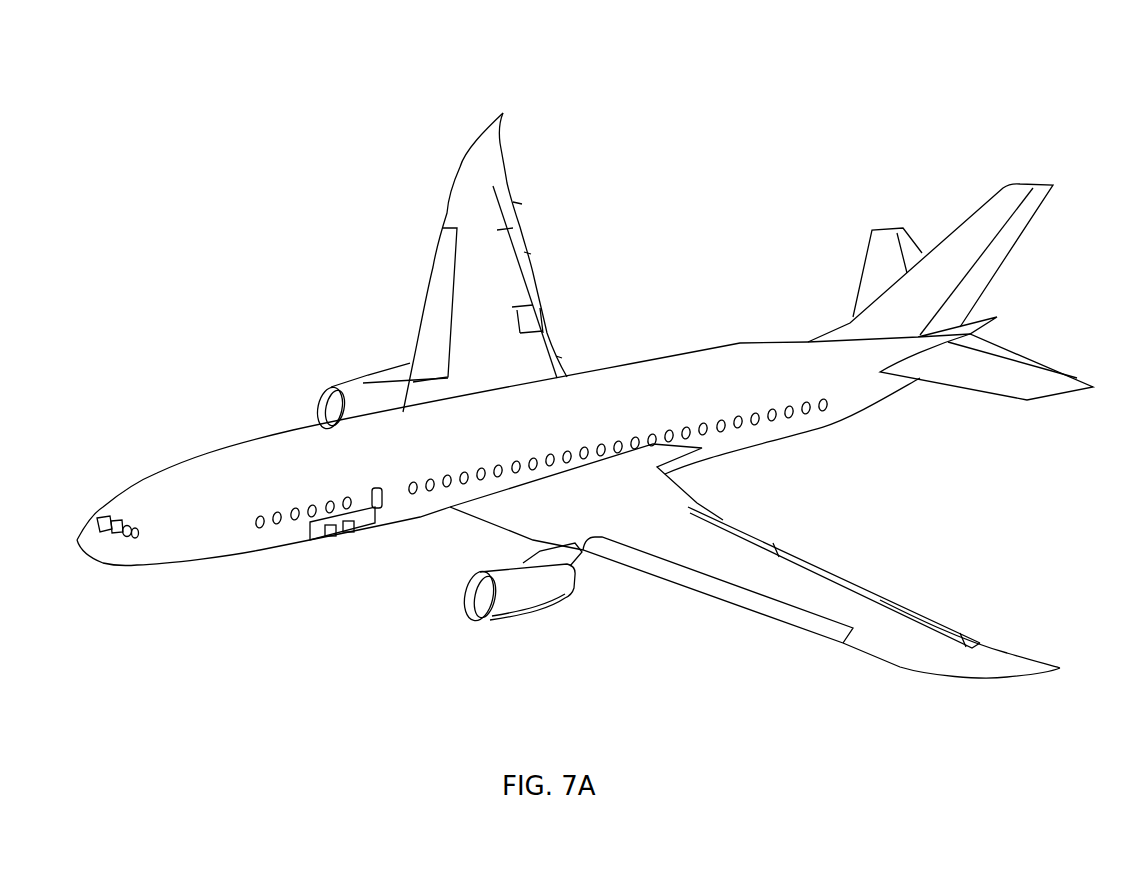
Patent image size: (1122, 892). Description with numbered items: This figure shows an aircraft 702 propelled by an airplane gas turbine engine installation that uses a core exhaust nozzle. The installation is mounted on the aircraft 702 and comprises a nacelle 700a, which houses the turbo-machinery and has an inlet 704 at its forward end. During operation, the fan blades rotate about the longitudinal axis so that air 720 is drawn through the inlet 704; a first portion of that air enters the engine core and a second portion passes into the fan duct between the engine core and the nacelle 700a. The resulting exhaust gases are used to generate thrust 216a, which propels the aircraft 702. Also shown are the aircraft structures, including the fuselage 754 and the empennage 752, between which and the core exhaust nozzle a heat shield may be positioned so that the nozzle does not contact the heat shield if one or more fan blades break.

The aircraft 702 is at (225, 205).
The empennage 752 is at (873, 157).
The fuselage 754 is at (748, 300).
The thrust 216a is at (867, 527).
The nacelle 700a is at (455, 597).
The inlet 704 is at (463, 590).
The air 720 is at (292, 663).